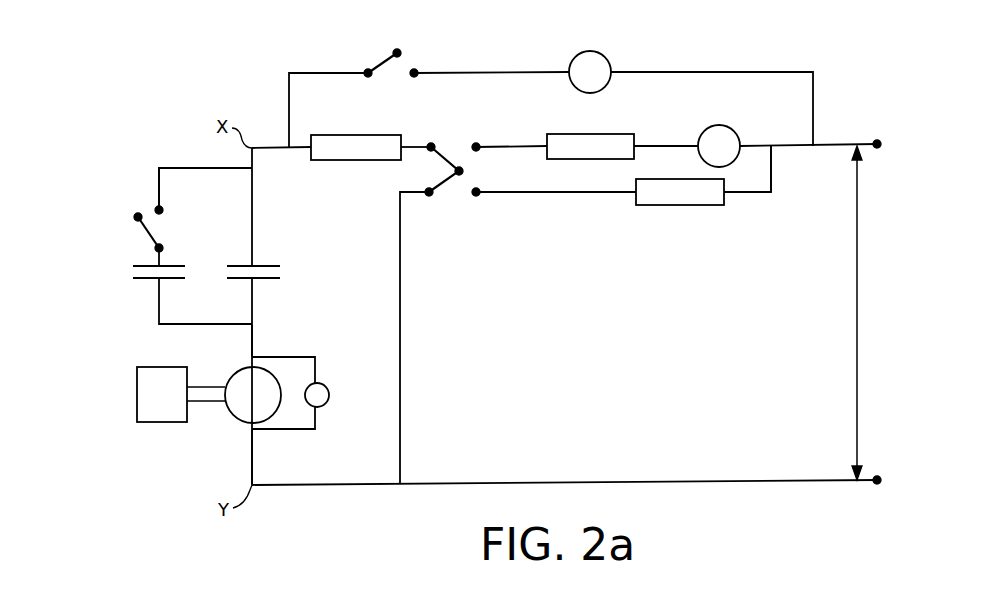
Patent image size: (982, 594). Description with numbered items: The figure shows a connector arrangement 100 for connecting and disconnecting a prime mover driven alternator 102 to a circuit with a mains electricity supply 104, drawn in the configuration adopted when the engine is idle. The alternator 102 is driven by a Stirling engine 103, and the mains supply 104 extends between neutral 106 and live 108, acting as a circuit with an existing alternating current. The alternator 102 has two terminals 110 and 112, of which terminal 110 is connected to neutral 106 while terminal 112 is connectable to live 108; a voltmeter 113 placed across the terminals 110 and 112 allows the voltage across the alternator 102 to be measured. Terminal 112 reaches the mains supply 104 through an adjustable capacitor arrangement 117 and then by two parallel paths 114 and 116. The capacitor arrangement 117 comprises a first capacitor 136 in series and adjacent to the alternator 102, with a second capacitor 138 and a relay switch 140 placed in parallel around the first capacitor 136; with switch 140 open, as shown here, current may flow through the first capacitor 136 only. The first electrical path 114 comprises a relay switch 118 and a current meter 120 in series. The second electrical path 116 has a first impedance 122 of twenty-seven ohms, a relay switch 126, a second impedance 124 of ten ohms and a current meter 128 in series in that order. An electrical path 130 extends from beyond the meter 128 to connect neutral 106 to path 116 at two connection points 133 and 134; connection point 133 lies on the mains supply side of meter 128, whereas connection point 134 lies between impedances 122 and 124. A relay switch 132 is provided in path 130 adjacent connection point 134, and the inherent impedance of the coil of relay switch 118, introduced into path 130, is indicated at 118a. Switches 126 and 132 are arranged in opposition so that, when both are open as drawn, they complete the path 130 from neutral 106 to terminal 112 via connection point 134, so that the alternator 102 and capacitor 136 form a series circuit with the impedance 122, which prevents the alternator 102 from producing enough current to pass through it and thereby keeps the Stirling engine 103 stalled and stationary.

The connector arrangement 100 is at (315, 509).
The alternator 102 is at (253, 395).
The Stirling engine 103 is at (181, 394).
The mains electricity supply 104 is at (857, 330).
The neutral 106 is at (877, 480).
The live 108 is at (877, 144).
The terminal 110 is at (253, 455).
The terminal 112 is at (253, 336).
The voltmeter 113 is at (325, 385).
The first electrical path 114 is at (695, 68).
The second electrical path 116 is at (650, 143).
The capacitor arrangement 117 is at (196, 163).
The relay switch 118 is at (381, 63).
The coil impedance 118a is at (690, 206).
The current meter 120 is at (576, 58).
The first impedance 122 is at (366, 135).
The second impedance 124 is at (563, 134).
The relay switch 126 is at (440, 147).
The current meter 128 is at (732, 131).
The electrical path 130 is at (548, 192).
The relay switch 132 is at (437, 192).
The connection point 133 is at (773, 148).
The connection point 134 is at (462, 171).
The first capacitor 136 is at (275, 266).
The second capacitor 138 is at (180, 266).
The relay switch 140 is at (147, 235).